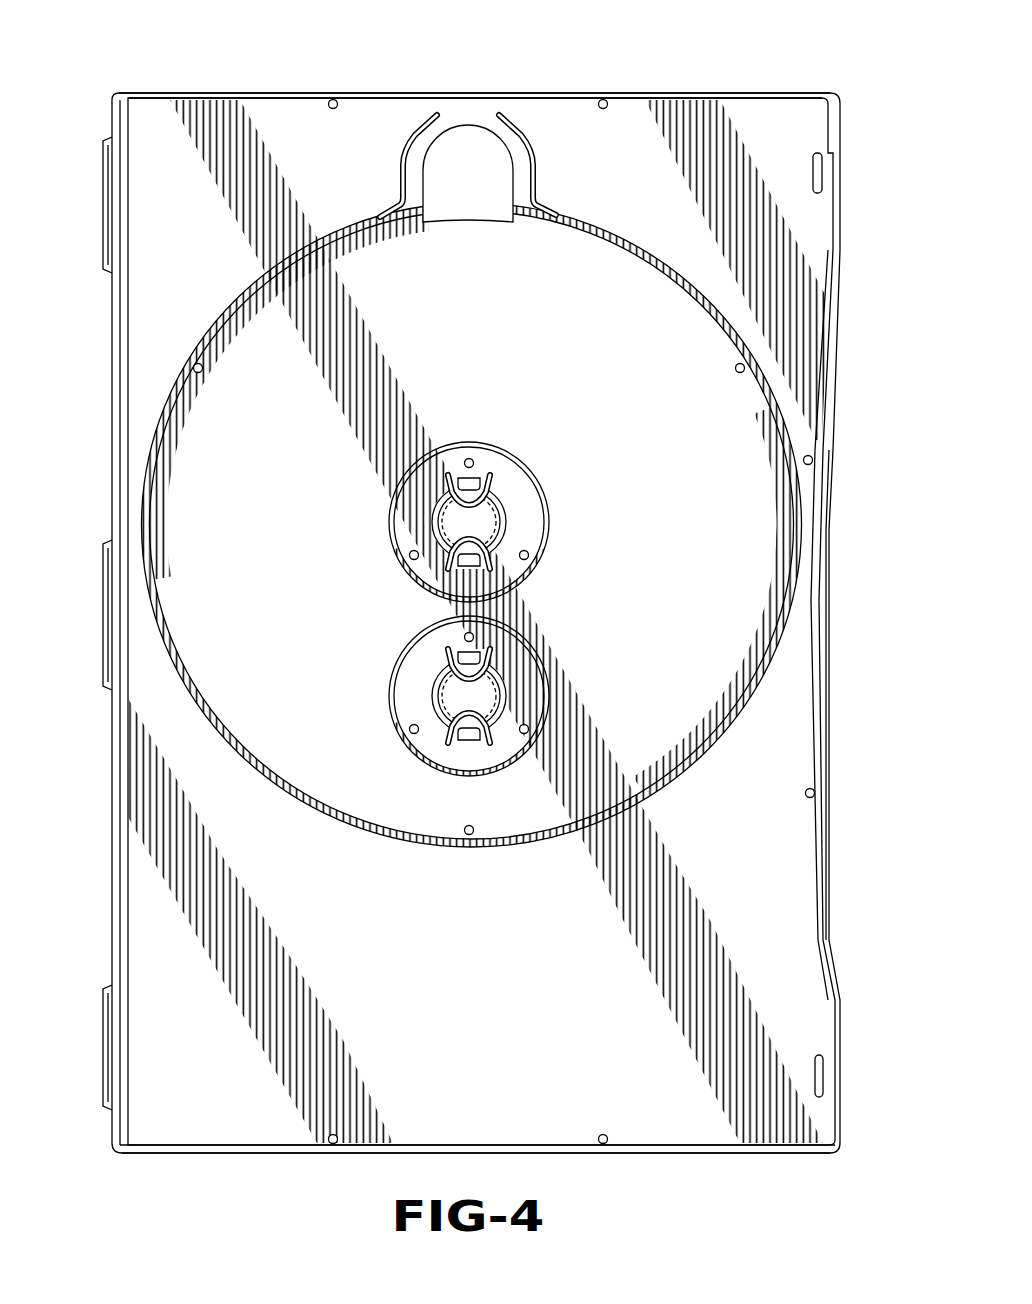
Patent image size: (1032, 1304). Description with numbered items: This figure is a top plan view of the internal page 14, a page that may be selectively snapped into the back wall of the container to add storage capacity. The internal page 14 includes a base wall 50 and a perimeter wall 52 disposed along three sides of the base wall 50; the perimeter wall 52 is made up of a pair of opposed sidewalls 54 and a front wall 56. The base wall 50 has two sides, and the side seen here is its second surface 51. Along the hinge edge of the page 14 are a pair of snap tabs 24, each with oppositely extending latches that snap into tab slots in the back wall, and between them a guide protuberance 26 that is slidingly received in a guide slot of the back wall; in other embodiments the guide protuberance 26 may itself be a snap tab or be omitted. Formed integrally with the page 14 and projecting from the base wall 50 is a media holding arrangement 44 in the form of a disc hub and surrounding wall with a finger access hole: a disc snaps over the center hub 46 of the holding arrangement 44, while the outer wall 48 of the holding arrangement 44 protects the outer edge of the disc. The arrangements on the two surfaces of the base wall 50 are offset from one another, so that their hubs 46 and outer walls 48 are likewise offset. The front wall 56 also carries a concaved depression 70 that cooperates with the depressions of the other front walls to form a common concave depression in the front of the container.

The internal page 14 is at (662, 68).
The tabs 24 is at (101, 200).
The guide protuberance 26 is at (101, 630).
The media holding arrangement 44 is at (438, 850).
The hub 46 is at (488, 523).
The outer wall 48 is at (370, 834).
The base wall 50 is at (567, 135).
The second surface 51 is at (300, 125).
The perimeter wall 52 is at (401, 85).
The sidewalls 54 is at (472, 92).
The front wall 56 is at (841, 223).
The concaved depressions 70 is at (822, 568).